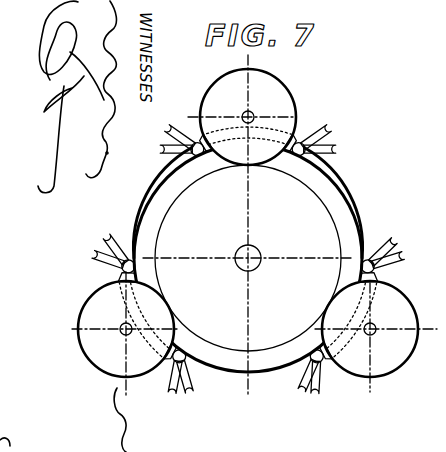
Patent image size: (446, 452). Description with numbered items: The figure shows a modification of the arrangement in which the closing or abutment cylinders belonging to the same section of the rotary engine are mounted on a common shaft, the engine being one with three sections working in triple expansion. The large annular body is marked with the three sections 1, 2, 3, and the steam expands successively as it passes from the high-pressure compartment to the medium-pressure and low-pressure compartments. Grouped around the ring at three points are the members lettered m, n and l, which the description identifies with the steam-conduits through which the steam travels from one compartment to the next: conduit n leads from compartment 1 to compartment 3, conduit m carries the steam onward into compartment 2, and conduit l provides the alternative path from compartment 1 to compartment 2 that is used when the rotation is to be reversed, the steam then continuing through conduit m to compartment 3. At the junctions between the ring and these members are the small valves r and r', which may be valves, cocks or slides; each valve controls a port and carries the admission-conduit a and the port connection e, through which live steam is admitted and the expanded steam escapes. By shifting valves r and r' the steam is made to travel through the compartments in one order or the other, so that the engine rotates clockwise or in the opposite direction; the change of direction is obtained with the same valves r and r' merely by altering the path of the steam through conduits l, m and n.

The section 1 is at (248, 258).
The section 2 is at (334, 203).
The section 3 is at (162, 203).
The steam-conduit m is at (223, 138).
The steam-conduit n is at (225, 261).
The steam-conduit l is at (277, 259).
The valve r is at (248, 226).
The valve r' is at (251, 244).
The admission-conduit a is at (239, 256).
The port e is at (255, 266).